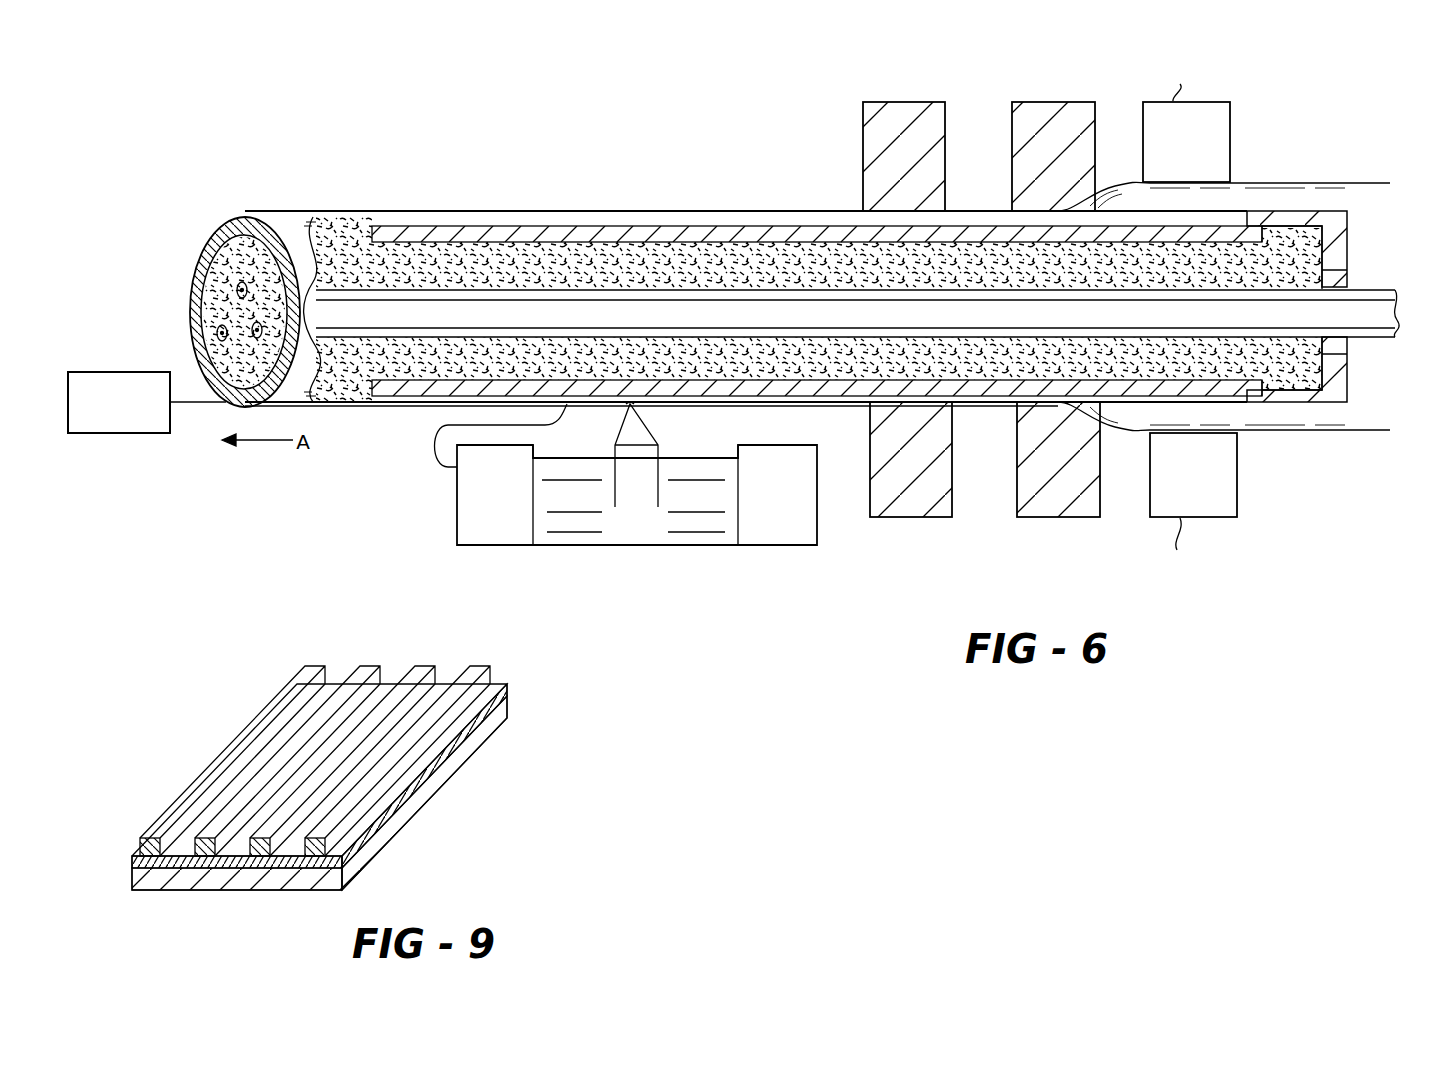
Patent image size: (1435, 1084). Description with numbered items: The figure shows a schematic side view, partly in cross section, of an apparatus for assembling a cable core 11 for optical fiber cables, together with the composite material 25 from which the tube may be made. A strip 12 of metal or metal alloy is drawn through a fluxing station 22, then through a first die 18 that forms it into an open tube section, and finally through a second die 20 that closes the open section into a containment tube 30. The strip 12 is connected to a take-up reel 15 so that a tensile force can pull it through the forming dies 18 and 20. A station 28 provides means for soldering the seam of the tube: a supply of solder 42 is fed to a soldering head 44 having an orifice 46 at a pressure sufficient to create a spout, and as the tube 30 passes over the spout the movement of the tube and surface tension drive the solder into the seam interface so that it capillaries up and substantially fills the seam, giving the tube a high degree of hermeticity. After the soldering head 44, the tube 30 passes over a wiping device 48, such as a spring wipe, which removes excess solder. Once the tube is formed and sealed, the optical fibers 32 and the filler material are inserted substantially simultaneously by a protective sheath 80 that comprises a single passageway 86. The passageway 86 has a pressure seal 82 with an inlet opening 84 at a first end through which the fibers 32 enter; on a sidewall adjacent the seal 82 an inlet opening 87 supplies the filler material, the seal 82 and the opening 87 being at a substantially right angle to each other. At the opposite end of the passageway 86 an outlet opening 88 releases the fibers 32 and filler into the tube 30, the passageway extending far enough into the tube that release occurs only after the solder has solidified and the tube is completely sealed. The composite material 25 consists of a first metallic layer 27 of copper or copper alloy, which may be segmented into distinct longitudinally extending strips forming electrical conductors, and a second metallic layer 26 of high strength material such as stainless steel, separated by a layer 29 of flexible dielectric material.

In FIG. 6, the cable core 11 is at (205, 202).
In FIG. 6, the strip 12 is at (1345, 196).
In FIG. 6, the take-up reel 15 is at (108, 372).
In FIG. 6, the first die 18 is at (1027, 101).
In FIG. 6, the second die 20 is at (862, 117).
In FIG. 6, the fluxing station 22 is at (1170, 143).
In FIG. 9, the composite material 25 is at (226, 735).
In FIG. 9, the second layer 26 is at (360, 858).
In FIG. 9, the first layer 27 is at (372, 662).
In FIG. 6, the station 28 is at (713, 548).
In FIG. 9, the layer of flexible dielectric material 29 is at (366, 834).
In FIG. 6, the containment tube 30 is at (282, 226).
In FIG. 6, the optical fibers 32 is at (252, 328).
In FIG. 6, the molten solder 42 is at (583, 524).
In FIG. 6, the soldering head 44 is at (654, 429).
In FIG. 6, the orifice 46 is at (620, 407).
In FIG. 6, the wiping device 48 is at (437, 448).
In FIG. 6, the protective sheath 80 is at (542, 216).
In FIG. 6, the pressure seal 82 is at (1350, 275).
In FIG. 6, the inlet opening 84 is at (1355, 340).
In FIG. 6, the passageway 86 is at (1310, 403).
In FIG. 6, the inlet opening 87 is at (1282, 250).
In FIG. 6, the outlet opening 88 is at (352, 250).